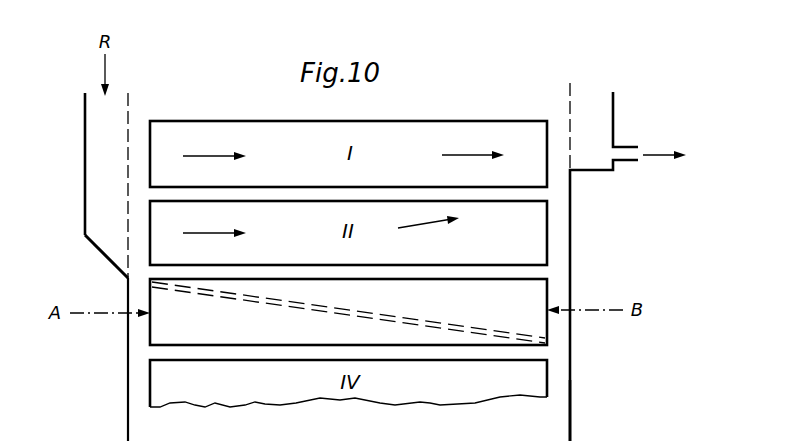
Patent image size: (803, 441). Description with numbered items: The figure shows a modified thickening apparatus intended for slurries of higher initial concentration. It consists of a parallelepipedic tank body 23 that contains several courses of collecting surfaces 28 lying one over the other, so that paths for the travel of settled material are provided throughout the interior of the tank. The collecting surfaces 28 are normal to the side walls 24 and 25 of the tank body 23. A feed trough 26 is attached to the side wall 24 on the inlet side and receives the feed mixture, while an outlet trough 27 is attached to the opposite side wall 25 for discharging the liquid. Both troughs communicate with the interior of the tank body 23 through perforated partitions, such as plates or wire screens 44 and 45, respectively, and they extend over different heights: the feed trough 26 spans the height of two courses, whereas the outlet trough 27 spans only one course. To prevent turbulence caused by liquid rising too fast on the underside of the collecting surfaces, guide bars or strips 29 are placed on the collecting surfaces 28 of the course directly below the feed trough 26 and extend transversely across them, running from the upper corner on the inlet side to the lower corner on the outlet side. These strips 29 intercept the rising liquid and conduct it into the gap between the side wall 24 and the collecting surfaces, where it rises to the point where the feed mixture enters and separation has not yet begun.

The perforated partition 44 is at (130, 128).
The perforated partition 45 is at (570, 112).
The feed trough 26 is at (102, 188).
The side wall 24 is at (128, 368).
The outlet trough 27 is at (597, 128).
The tank body 23 is at (560, 222).
The side wall 25 is at (570, 403).
The collecting surface 28 is at (532, 298).
The guide strip 29 is at (545, 343).